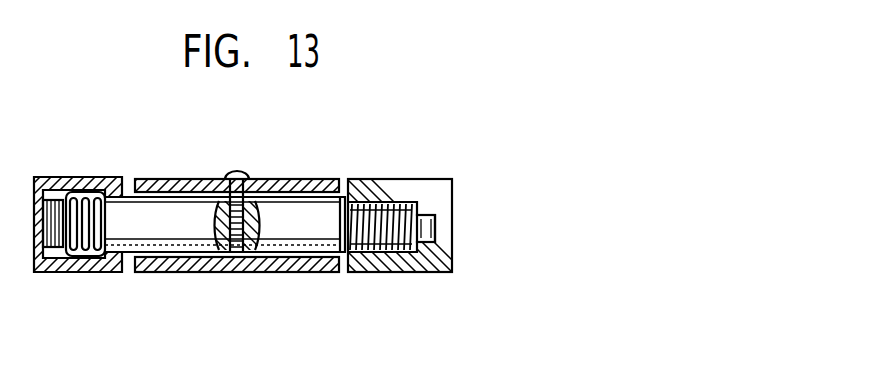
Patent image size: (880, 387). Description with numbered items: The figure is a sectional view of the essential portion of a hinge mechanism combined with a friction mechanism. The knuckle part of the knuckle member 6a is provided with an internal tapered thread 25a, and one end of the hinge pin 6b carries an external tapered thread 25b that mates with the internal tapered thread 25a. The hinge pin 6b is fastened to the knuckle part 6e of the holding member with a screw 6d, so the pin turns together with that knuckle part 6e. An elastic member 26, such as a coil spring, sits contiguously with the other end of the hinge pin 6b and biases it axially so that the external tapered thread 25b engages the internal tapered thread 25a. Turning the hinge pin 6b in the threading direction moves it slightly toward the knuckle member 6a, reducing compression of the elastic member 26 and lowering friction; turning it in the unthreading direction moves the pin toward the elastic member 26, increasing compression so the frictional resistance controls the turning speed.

The knuckle member 6a is at (443, 234).
The hinge pin 6b is at (308, 242).
The screw 6d is at (236, 174).
The knuckle part of the holding member 6e is at (195, 262).
The internal tapered thread 25a is at (418, 183).
The external tapered thread 25b is at (388, 272).
The elastic member 26 is at (89, 256).